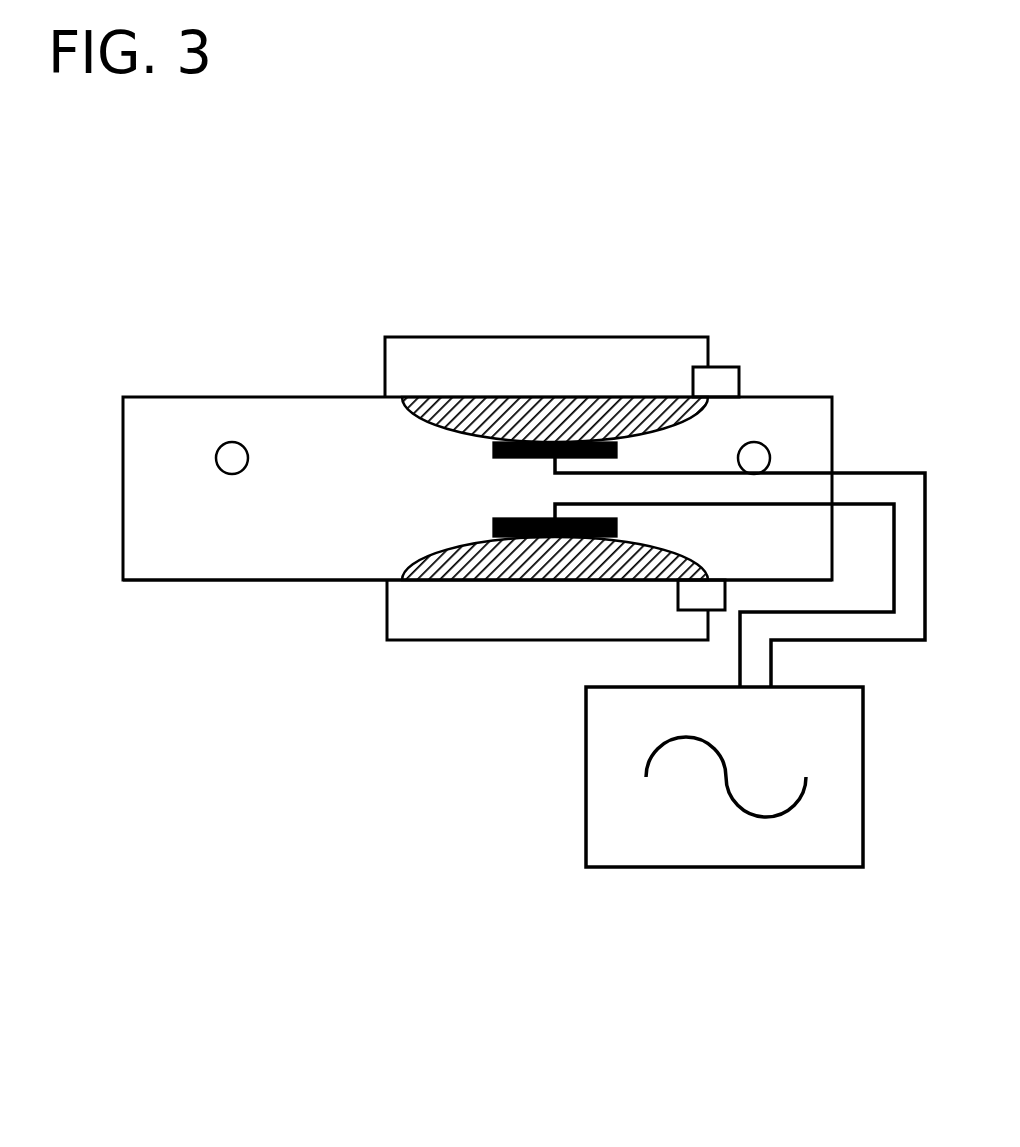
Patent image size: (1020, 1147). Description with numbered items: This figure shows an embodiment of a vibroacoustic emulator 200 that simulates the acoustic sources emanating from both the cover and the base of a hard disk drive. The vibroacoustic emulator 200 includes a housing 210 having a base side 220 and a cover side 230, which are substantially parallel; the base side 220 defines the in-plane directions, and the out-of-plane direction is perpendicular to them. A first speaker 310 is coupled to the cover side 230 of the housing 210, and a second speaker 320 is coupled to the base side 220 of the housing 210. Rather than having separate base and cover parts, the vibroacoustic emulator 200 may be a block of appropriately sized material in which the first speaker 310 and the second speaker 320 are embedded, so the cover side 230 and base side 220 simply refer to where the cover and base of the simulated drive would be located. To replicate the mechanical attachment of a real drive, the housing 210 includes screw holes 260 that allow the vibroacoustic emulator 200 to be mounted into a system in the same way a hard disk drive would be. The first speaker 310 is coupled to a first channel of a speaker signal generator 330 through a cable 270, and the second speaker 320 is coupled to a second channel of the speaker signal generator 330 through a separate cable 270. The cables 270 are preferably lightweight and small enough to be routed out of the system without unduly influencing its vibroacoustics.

The vibroacoustic emulator 200 is at (612, 213).
The housing 210 is at (280, 379).
The base side 220 is at (337, 582).
The cover side 230 is at (372, 388).
The screw holes 260 is at (226, 475).
The cable 270 is at (771, 663).
The first speaker 310 is at (538, 397).
The second speaker 320 is at (597, 581).
The speaker signal generator 330 is at (603, 868).